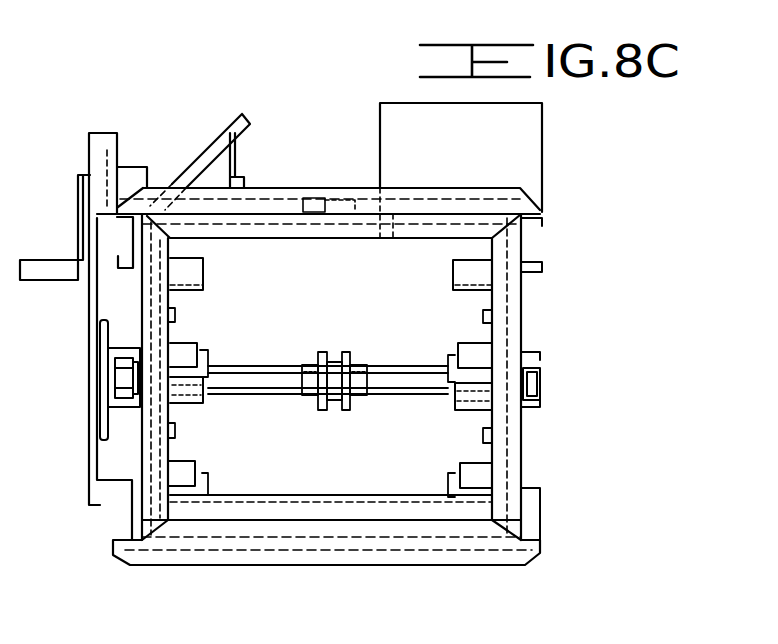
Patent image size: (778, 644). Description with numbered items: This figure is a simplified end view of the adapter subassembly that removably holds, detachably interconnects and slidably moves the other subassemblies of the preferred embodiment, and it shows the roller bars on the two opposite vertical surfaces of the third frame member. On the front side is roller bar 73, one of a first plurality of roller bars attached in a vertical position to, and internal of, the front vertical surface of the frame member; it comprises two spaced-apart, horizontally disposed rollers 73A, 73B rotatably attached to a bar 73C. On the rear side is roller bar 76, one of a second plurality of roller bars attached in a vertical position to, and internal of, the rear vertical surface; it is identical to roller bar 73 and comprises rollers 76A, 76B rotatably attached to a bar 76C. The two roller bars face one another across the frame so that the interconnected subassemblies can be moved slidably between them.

The roller bar 73 is at (200, 258).
The roller 73A is at (190, 343).
The roller 73B is at (185, 460).
The bar 73C is at (165, 452).
The roller bar 76 is at (448, 262).
The roller 76A is at (470, 343).
The roller 76B is at (460, 462).
The bar 76C is at (480, 453).